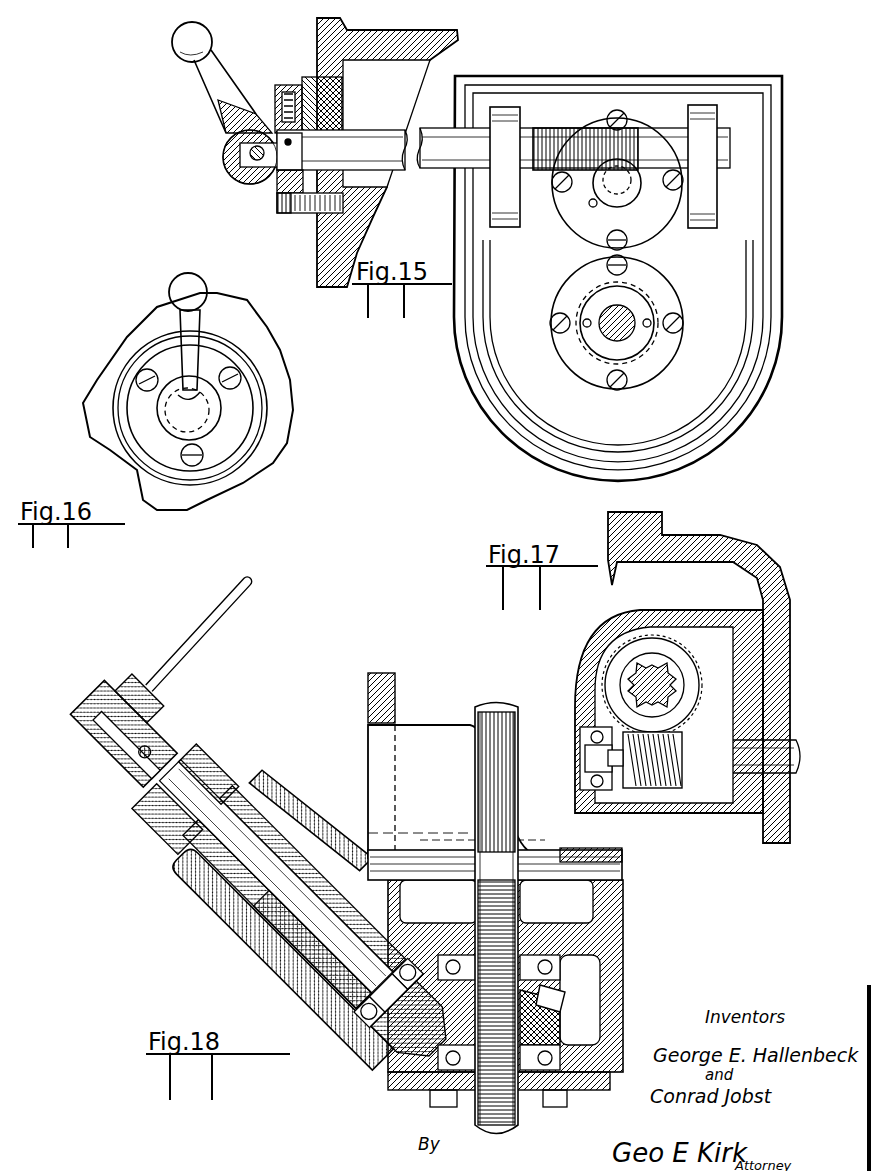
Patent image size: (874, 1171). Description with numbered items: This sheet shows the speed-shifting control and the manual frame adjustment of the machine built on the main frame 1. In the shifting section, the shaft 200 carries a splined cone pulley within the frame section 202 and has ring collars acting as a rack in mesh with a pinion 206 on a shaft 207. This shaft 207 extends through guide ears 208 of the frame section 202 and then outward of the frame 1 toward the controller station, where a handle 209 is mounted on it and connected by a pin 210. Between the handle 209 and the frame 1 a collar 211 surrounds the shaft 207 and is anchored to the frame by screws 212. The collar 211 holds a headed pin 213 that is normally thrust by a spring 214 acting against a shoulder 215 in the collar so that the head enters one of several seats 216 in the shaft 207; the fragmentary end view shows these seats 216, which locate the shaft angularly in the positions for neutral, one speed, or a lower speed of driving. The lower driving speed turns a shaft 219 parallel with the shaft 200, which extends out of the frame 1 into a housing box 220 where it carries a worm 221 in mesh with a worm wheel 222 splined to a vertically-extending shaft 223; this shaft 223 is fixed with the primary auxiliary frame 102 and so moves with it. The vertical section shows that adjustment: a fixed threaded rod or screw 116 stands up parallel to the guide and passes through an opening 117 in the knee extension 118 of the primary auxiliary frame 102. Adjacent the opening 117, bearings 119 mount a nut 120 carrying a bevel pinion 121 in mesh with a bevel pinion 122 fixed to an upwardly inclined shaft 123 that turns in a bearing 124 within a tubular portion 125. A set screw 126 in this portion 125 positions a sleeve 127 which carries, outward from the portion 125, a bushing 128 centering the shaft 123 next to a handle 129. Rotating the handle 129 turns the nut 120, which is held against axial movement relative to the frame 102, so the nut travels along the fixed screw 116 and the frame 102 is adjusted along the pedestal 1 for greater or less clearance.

In FIG. 15, the main frame 1 is at (318, 238).
In FIG. 17, the main frame 1 is at (690, 560).
In FIG. 18, the primary auxiliary frame 102 is at (624, 917).
In FIG. 18, the threaded rod or screw 116 is at (519, 1116).
In FIG. 18, the opening 117 is at (495, 854).
In FIG. 18, the knee extension 118 is at (372, 790).
In FIG. 18, the bearings 119 is at (578, 956).
In FIG. 18, the nut 120 is at (538, 1022).
In FIG. 18, the bevel pinion 121 is at (556, 1006).
In FIG. 18, the bevel pinion 122 is at (392, 1077).
In FIG. 18, the upwardly inclined shaft 123 is at (236, 942).
In FIG. 18, the bearing 124 is at (336, 1035).
In FIG. 18, the tubular portion 125 is at (265, 967).
In FIG. 18, the set screw 126 is at (285, 994).
In FIG. 18, the sleeve 127 is at (165, 822).
In FIG. 18, the bushing 128 is at (222, 765).
In FIG. 18, the handle 129 is at (190, 645).
In FIG. 17, the shaft 200 is at (607, 185).
In FIG. 17, the frame section 202 is at (718, 428).
In FIG. 17, the pinion 206 is at (568, 126).
In FIG. 15, the shaft 207 is at (376, 125).
In FIG. 17, the shaft 207 is at (683, 108).
In FIG. 17, the guide ears 208 is at (500, 107).
In FIG. 15, the handle 209 is at (224, 100).
In FIG. 16, the handle 209 is at (170, 290).
In FIG. 15, the pin 210 is at (258, 150).
In FIG. 15, the collar 211 is at (279, 186).
In FIG. 16, the collar 211 is at (247, 395).
In FIG. 15, the screws 212 is at (285, 210).
In FIG. 16, the screws 212 is at (232, 376).
In FIG. 15, the headed pin 213 is at (291, 142).
In FIG. 15, the spring 214 is at (292, 88).
In FIG. 15, the shoulder 215 is at (304, 97).
In FIG. 15, the seats 216 is at (250, 178).
In FIG. 16, the seats 216 is at (209, 408).
In FIG. 17, the shaft 219 is at (628, 335).
In FIG. 17, the housing box 220 is at (682, 822).
In FIG. 17, the worm 221 is at (680, 782).
In FIG. 17, the worm wheel 222 is at (673, 685).
In FIG. 17, the vertically-extending shaft 223 is at (634, 673).